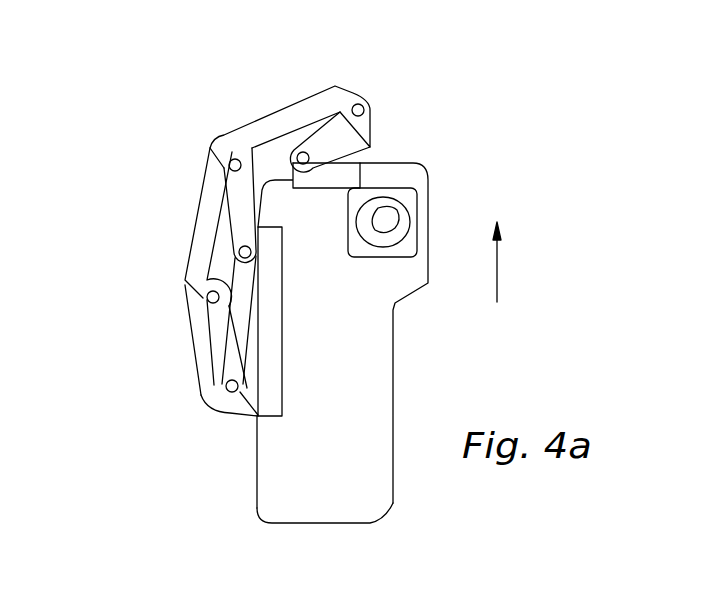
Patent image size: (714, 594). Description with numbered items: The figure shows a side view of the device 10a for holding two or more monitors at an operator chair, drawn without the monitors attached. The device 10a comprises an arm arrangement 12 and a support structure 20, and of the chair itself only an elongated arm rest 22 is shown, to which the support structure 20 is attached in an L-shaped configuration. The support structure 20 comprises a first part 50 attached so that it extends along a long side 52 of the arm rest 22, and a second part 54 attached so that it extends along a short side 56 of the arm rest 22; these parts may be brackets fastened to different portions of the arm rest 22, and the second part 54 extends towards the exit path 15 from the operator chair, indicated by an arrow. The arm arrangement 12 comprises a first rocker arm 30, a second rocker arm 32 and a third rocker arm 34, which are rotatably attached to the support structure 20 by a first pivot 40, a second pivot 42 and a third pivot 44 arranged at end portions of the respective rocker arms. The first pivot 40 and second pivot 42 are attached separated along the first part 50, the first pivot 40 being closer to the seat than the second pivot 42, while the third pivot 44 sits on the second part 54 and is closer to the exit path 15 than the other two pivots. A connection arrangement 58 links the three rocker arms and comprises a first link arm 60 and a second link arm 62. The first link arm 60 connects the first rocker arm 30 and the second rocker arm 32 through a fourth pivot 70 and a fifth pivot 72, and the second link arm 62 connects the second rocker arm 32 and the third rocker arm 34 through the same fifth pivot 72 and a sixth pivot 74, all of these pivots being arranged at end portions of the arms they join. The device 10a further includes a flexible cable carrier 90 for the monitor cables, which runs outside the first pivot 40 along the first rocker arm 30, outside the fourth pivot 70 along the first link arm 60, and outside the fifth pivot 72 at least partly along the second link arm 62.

The device 10a is at (152, 60).
The arm arrangement 12 is at (480, 78).
The exit path 15 is at (498, 268).
The support structure 20 is at (233, 430).
The arm rest 22 is at (350, 488).
The first rocker arm 30 is at (220, 330).
The second rocker arm 32 is at (242, 205).
The third rocker arm 34 is at (360, 123).
The first pivot 40 is at (222, 403).
The second pivot 42 is at (252, 253).
The third pivot 44 is at (305, 150).
The first part 50 is at (272, 305).
The long side 52 is at (257, 490).
The second part 54 is at (352, 177).
The short side 56 is at (418, 165).
The connection arrangement 58 is at (334, 55).
The first link arm 60 is at (203, 245).
The second link arm 62 is at (268, 127).
The fourth pivot 70 is at (203, 297).
The fifth pivot 72 is at (230, 158).
The sixth pivot 74 is at (359, 104).
The flexible cable carrier 90 is at (210, 372).